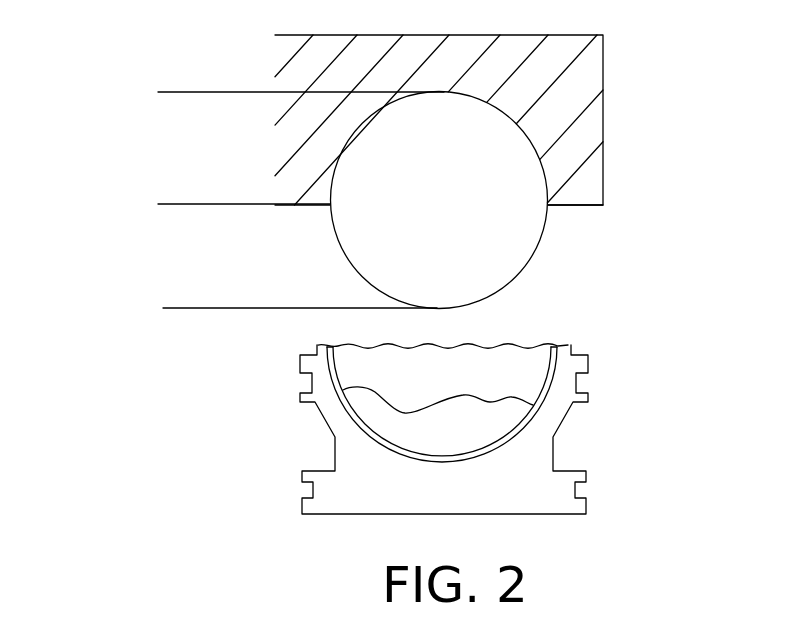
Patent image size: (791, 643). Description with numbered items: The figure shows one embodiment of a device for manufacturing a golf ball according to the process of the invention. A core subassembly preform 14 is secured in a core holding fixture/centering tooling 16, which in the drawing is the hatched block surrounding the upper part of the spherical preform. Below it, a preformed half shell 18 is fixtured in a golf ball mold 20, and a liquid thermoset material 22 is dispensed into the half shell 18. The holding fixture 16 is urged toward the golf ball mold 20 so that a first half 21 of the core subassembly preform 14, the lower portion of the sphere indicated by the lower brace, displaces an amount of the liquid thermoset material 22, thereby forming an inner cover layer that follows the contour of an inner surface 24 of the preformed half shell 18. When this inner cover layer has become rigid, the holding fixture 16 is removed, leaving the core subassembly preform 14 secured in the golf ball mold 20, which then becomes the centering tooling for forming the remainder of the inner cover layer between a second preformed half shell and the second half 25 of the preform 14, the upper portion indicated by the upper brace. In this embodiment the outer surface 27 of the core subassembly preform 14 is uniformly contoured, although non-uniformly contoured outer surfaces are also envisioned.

The core holding fixture/centering tooling 16 is at (617, 90).
The core subassembly preform 14 is at (563, 247).
The outer surface 27 is at (550, 228).
The second half 25 is at (138, 93).
The first half 21 is at (138, 310).
The preformed half shell 18 is at (320, 363).
The golf ball mold 20 is at (285, 487).
The inner surface 24 is at (540, 375).
The liquid thermoset material 22 is at (487, 430).